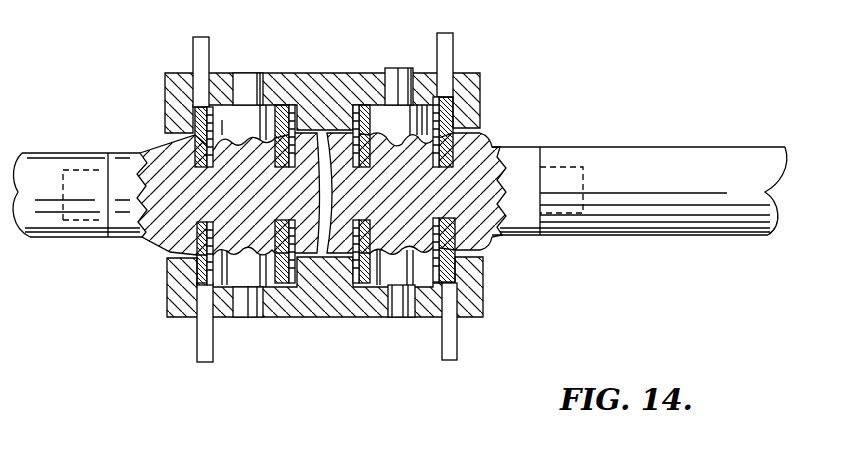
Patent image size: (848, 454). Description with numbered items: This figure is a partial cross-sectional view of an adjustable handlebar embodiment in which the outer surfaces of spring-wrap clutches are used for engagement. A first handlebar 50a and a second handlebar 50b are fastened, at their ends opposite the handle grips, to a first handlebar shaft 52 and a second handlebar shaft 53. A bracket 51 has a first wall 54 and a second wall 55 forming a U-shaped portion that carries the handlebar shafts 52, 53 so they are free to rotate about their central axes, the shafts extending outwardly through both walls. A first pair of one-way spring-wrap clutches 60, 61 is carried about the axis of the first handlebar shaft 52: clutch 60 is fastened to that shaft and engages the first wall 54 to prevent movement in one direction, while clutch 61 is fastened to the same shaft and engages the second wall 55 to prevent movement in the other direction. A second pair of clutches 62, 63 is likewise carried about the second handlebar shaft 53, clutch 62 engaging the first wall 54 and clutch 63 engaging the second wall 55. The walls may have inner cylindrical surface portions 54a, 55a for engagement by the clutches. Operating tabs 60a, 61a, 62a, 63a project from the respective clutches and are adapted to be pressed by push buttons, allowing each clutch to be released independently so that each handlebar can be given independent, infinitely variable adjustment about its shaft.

The first handlebar 50a is at (603, 147).
The second handlebar 50b is at (65, 153).
The bracket 51 is at (328, 73).
The first handlebar shaft 52 is at (470, 163).
The second handlebar shaft 53 is at (167, 153).
The first wall 54 is at (322, 305).
The inner cylindrical surface portion 54a is at (295, 318).
The second wall 55 is at (342, 77).
The inner cylindrical surface portion 55a is at (203, 110).
The one-way spring-wrap clutch 60 is at (457, 258).
The operating tab 60a is at (452, 343).
The one-way spring-wrap clutch 61 is at (452, 115).
The operating tab 61a is at (447, 50).
The one-way spring-wrap clutch 62 is at (197, 283).
The operating tab 62a is at (200, 333).
The one-way spring-wrap clutch 63 is at (285, 108).
The operating tab 63a is at (205, 48).